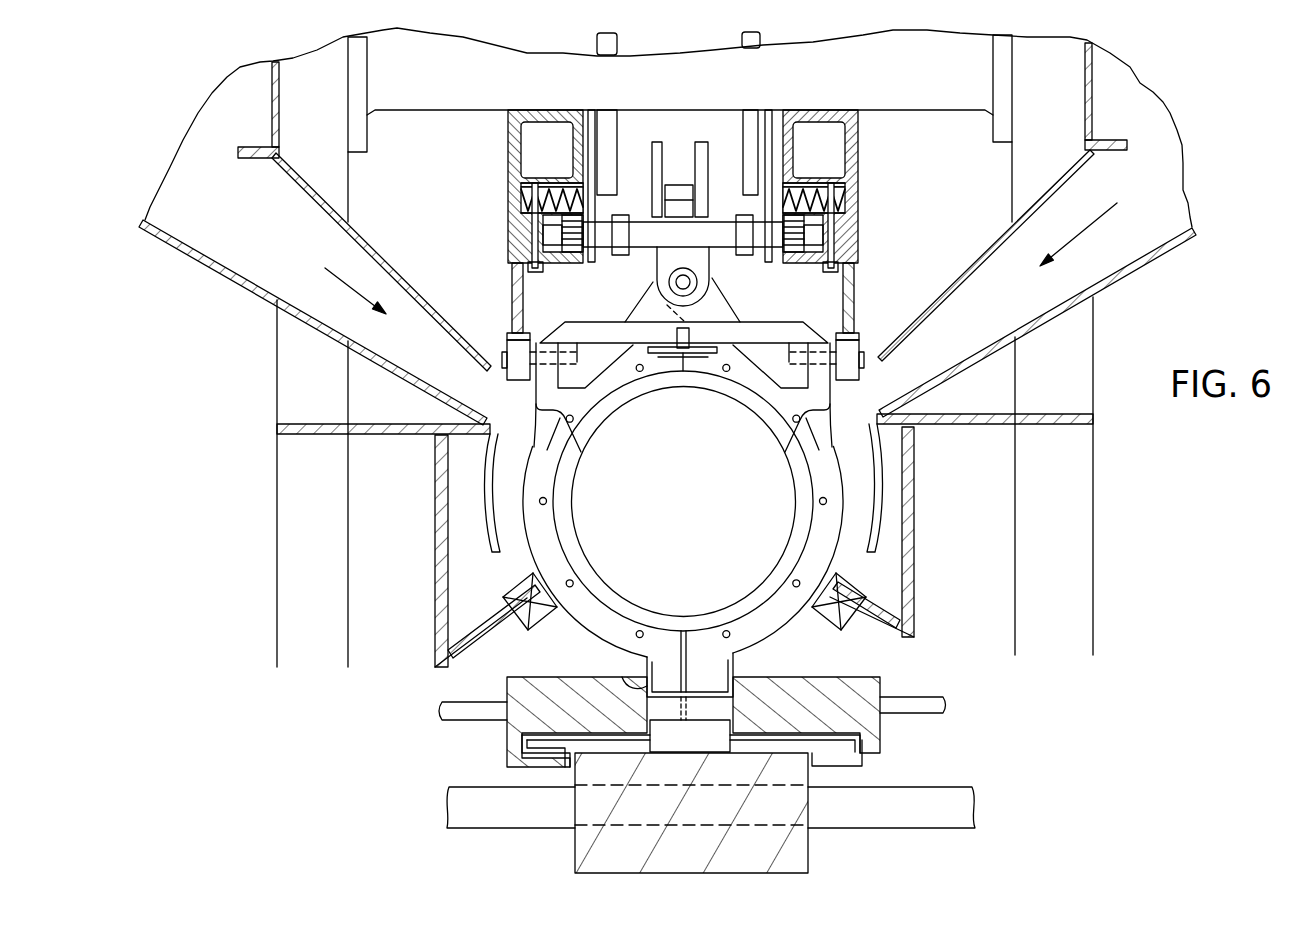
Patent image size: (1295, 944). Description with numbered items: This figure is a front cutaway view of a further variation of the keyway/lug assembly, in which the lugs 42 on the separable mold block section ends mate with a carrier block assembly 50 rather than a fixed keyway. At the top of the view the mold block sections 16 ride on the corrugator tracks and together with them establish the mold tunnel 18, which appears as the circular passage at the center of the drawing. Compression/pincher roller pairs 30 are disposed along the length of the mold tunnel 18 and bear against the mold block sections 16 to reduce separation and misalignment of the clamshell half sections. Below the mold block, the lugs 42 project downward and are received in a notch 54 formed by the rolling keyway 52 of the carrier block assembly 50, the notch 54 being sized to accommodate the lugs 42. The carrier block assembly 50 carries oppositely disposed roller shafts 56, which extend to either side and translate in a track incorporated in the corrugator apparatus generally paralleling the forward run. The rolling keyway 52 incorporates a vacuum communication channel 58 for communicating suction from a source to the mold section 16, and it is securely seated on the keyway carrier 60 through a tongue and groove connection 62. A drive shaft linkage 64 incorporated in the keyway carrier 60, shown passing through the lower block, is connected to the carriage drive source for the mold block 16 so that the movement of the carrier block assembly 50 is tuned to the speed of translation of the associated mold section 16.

The mold block section 16 is at (813, 432).
The mold tunnel 18 is at (698, 500).
The compression/pincher roller pairs 30 is at (433, 578).
The lugs 42 is at (710, 678).
The carrier block assembly 50 is at (428, 766).
The rolling keyway 52 is at (864, 748).
The notch 54 is at (630, 672).
The roller shafts 56 is at (440, 708).
The vacuum communication channel 58 is at (680, 730).
The keyway carrier 60 is at (808, 850).
The tongue and groove connection 62 is at (835, 757).
The drive shaft linkage 64 is at (918, 808).